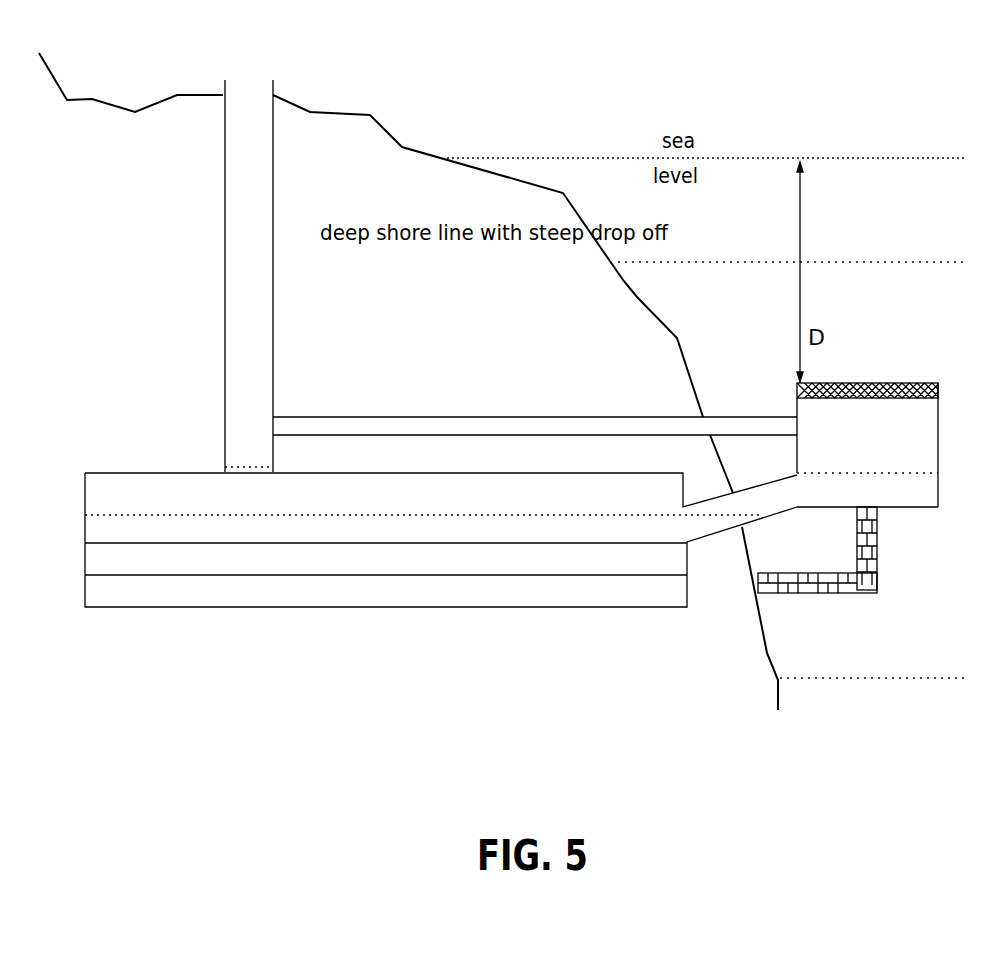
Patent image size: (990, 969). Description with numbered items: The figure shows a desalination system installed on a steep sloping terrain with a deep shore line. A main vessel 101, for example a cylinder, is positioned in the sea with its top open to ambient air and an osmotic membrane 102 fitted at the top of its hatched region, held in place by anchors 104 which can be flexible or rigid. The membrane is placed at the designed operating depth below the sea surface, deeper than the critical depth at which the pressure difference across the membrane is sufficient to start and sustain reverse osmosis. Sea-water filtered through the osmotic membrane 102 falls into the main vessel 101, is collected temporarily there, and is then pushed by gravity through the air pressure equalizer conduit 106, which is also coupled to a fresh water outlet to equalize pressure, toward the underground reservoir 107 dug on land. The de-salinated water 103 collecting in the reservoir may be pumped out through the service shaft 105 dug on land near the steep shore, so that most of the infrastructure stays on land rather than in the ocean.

The main vessel 101 is at (933, 507).
The osmotic membrane 102 is at (882, 380).
The de-salinated water 103 is at (250, 467).
The anchors 104 is at (800, 594).
The service shaft 105 is at (224, 305).
The air pressure equalizer conduit 106 is at (405, 415).
The underground reservoir 107 is at (121, 472).